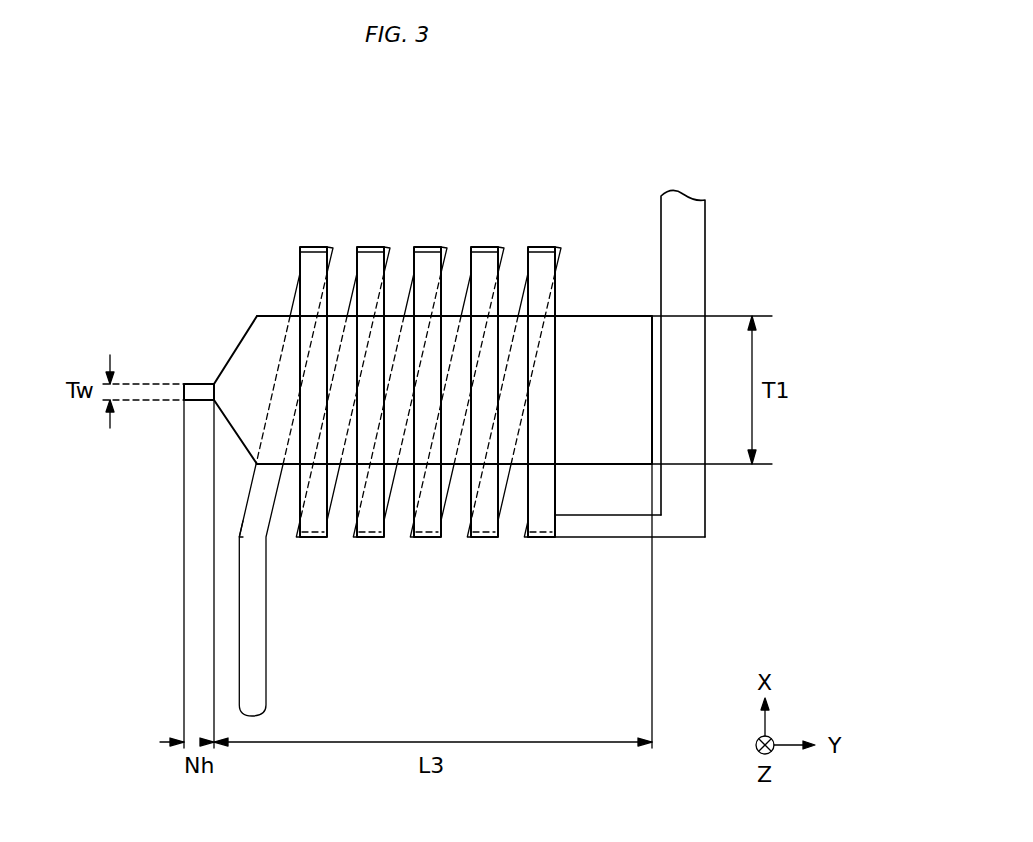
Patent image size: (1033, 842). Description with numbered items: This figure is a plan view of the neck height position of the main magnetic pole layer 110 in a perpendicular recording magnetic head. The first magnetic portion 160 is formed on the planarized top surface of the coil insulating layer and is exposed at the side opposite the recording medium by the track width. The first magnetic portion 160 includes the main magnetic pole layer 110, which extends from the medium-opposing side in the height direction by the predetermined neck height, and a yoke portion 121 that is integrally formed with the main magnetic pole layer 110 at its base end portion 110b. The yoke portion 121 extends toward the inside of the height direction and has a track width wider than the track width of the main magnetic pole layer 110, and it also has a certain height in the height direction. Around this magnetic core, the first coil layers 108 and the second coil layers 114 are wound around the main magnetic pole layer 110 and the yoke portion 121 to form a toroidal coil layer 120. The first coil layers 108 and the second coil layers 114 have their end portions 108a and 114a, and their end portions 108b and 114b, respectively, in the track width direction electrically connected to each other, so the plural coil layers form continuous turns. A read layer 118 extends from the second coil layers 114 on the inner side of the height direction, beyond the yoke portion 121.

The first coil layers 108 is at (318, 540).
The end portion of the first coil layers 108a is at (303, 246).
The end portion of the first coil layers 108b is at (304, 543).
The main magnetic pole layer 110 is at (192, 384).
The base end portion of the main magnetic pole layer 110b is at (213, 384).
The second coil layers 114 is at (346, 300).
The end portion of the second coil layers 114a is at (293, 306).
The end portion of the second coil layers 114b is at (300, 553).
The read layer 118 is at (705, 265).
The toroidal coil layer 120 is at (466, 246).
The yoke portion 121 is at (262, 316).
The first magnetic portion 160 is at (626, 466).